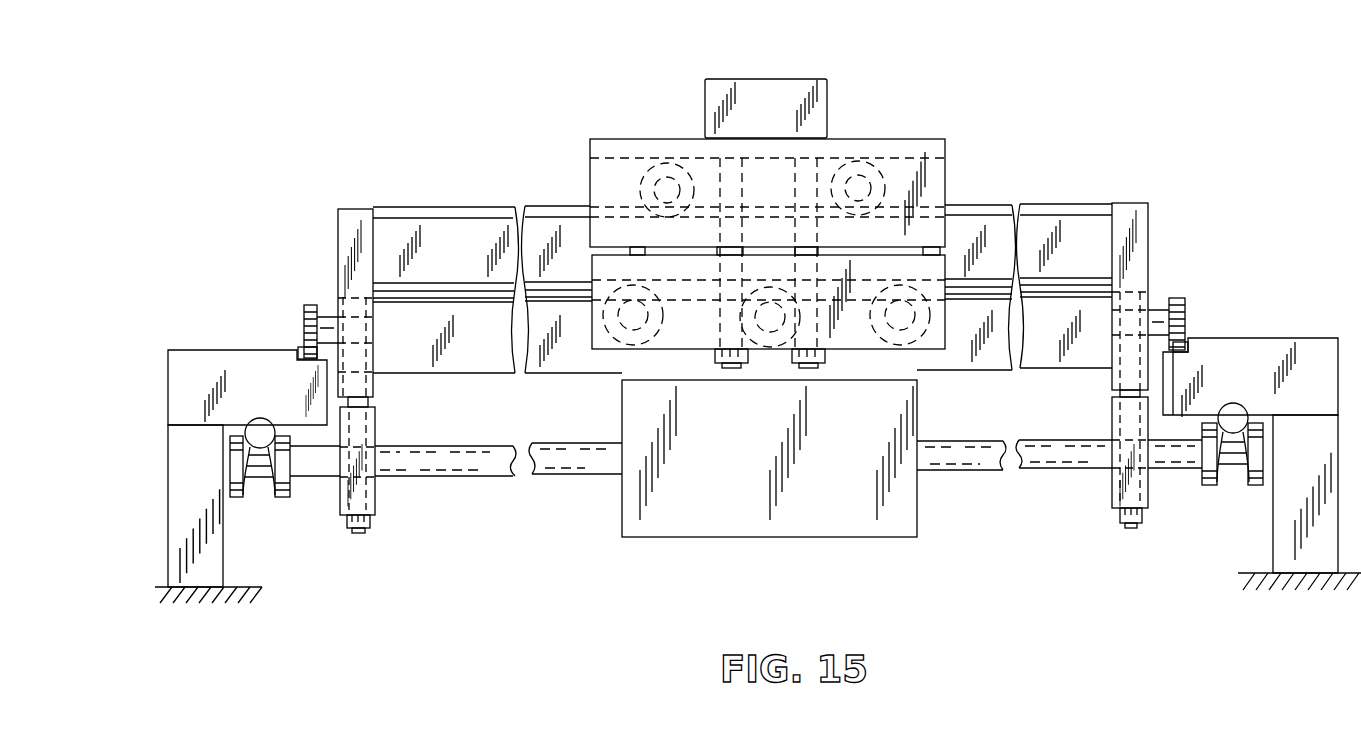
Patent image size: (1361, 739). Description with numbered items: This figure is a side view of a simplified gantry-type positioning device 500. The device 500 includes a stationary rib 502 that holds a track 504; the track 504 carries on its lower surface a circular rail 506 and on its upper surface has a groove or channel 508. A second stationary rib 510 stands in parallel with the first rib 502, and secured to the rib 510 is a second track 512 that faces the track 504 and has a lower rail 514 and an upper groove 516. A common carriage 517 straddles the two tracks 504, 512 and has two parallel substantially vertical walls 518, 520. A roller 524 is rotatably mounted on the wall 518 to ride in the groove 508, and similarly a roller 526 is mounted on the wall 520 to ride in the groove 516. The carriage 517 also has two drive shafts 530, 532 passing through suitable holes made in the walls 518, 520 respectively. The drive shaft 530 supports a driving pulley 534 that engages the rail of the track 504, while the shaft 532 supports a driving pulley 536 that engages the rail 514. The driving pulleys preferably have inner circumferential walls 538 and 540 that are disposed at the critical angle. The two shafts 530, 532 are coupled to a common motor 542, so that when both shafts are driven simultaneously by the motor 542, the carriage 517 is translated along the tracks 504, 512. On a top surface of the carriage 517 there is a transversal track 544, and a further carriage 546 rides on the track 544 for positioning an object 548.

The gantry-type positioning device 500 is at (433, 110).
The stationary rib 502 is at (222, 577).
The track 504 is at (210, 358).
The circular rail 506 is at (262, 418).
The groove 508 is at (302, 347).
The second stationary rib 510 is at (1290, 557).
The second track 512 is at (1245, 349).
The lower rail 514 is at (1233, 404).
The upper groove 516 is at (1188, 342).
The common carriage 517 is at (1113, 190).
The vertical wall 518 is at (343, 225).
The vertical wall 520 is at (1142, 233).
The roller 524 is at (310, 303).
The roller 526 is at (1175, 298).
The drive shaft 530 is at (450, 460).
The drive shaft 532 is at (973, 455).
The driving pulley 534 is at (290, 492).
The driving pulley 536 is at (1202, 472).
The inner circumferential wall 538 is at (268, 492).
The inner circumferential wall 540 is at (1222, 475).
The common motor 542 is at (822, 517).
The transversal track 544 is at (983, 227).
The carriage 546 is at (897, 145).
The object 548 is at (785, 92).